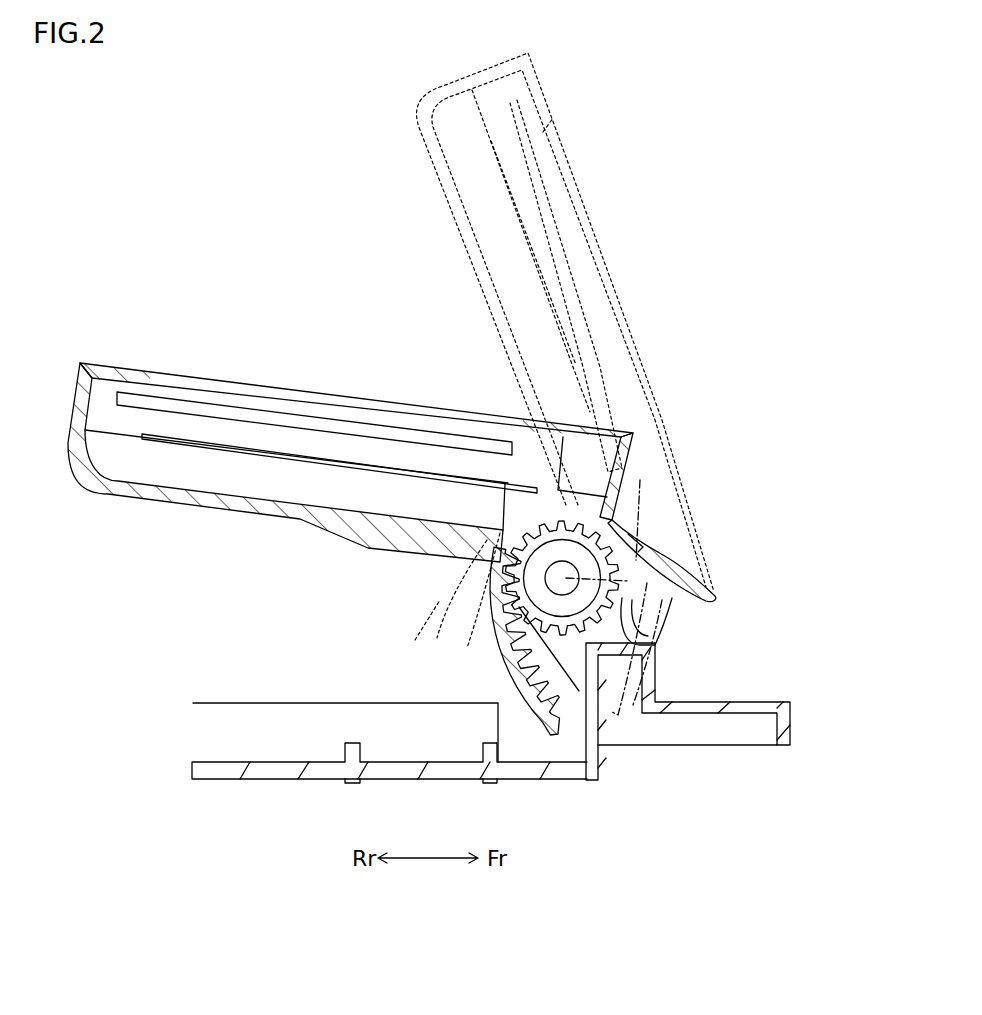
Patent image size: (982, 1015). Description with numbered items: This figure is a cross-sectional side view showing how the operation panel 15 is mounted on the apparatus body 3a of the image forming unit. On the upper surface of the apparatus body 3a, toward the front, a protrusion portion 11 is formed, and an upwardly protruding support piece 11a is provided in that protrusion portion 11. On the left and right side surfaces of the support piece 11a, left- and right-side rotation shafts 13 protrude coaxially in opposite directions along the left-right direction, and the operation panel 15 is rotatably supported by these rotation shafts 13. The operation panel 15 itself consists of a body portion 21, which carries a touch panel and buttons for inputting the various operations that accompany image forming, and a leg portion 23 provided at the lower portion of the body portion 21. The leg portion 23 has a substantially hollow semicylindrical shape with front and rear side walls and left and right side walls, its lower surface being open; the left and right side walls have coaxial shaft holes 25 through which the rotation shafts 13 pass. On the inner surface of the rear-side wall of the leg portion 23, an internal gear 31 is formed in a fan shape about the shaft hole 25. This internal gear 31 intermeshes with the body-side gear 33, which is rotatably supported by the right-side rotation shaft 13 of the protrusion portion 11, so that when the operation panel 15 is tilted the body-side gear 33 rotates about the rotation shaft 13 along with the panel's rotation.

The operation panel 15 is at (262, 345).
The body portion 21 is at (298, 387).
The leg portion 23 is at (664, 557).
The body-side gear 33 is at (643, 535).
The rotation shaft 13 is at (683, 597).
The shaft hole 25 is at (562, 578).
The protrusion portion 11 is at (657, 668).
The support piece 11a is at (657, 628).
The apparatus body 3a is at (757, 727).
The internal gear 31 is at (502, 642).